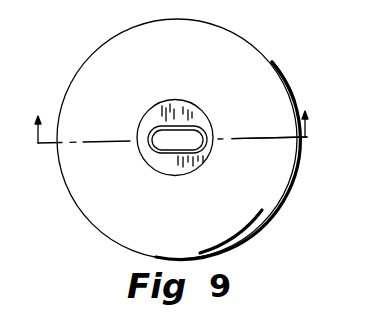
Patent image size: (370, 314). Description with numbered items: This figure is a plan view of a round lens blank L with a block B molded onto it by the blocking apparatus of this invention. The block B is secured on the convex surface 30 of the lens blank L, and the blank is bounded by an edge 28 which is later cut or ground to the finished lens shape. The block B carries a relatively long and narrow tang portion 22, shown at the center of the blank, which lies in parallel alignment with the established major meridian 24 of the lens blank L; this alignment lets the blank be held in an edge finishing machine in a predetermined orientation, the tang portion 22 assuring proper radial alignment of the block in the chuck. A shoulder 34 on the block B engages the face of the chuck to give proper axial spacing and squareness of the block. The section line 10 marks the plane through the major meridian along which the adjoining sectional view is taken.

The section line 10- 10 is at (175, 146).
The tang portion 22 is at (172, 137).
The shoulder 34 is at (208, 131).
The major meridian 24 is at (238, 141).
The edge 28 is at (275, 204).
The convex surface 30 is at (113, 227).
The lens blank L is at (262, 72).
The block B is at (158, 173).